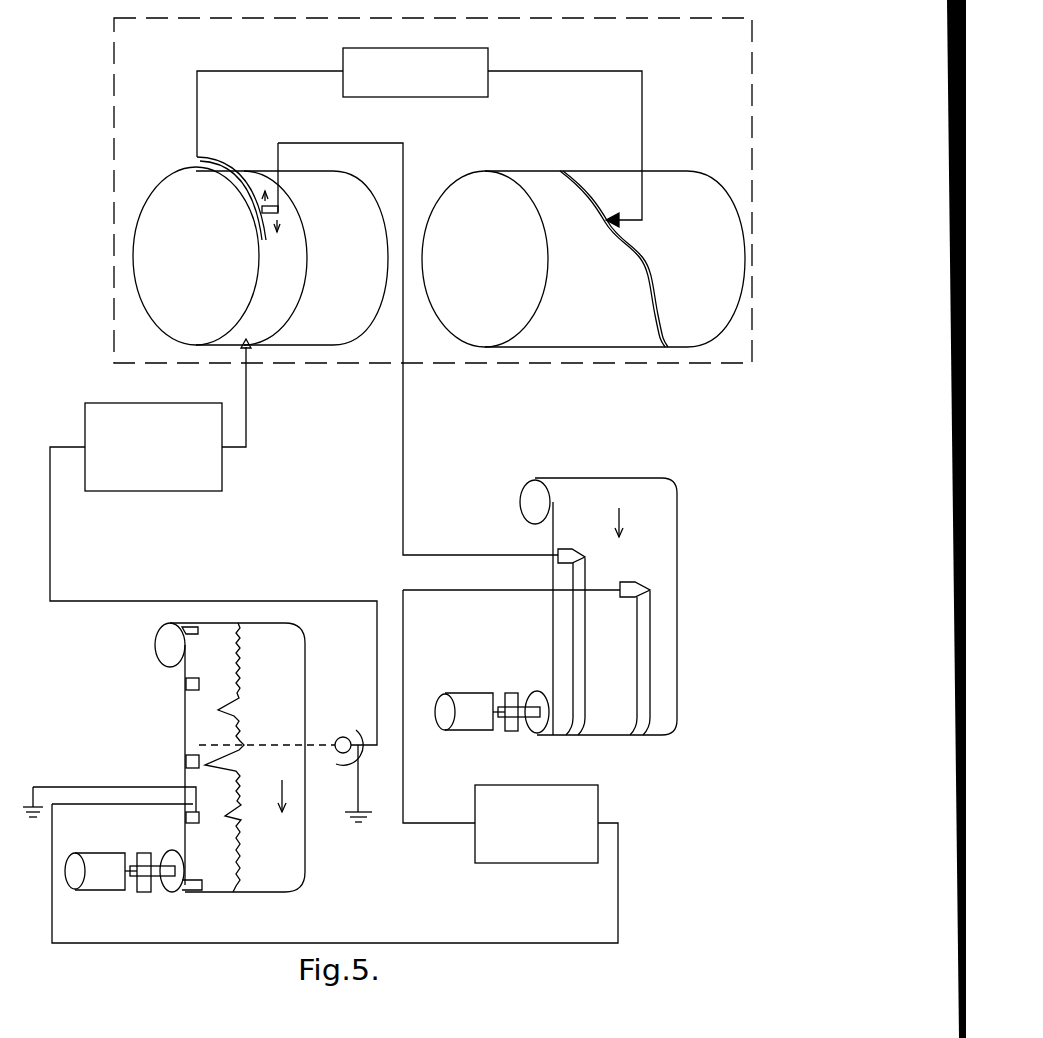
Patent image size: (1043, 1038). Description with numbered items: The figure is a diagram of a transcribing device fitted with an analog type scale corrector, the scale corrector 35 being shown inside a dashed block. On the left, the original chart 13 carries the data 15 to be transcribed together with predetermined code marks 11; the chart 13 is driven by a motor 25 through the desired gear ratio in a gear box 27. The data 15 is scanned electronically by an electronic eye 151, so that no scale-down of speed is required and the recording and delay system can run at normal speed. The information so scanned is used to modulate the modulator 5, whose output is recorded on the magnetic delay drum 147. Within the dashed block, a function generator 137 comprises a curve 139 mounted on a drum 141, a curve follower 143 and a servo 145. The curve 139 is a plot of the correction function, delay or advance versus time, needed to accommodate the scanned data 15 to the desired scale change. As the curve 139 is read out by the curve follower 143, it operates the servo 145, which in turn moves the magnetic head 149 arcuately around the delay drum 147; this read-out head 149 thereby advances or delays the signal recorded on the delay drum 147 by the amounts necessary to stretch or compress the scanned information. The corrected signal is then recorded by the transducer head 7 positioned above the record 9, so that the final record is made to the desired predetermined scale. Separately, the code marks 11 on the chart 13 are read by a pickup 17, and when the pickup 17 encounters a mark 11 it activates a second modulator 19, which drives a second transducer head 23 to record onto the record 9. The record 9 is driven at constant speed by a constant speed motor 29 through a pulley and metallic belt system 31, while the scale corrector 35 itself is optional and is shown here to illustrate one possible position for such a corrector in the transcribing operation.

The modulator 5 is at (150, 403).
The transducer head 7 is at (576, 551).
The record 9 is at (677, 548).
The code marks 11 is at (186, 683).
The chart 13 is at (305, 670).
The data 15 is at (241, 805).
The pickup 17 is at (200, 812).
The modulator 19 is at (527, 863).
The transducer head 23 is at (633, 582).
The motor 25 is at (97, 892).
The gear box 27 is at (150, 892).
The constant speed motor 29 is at (467, 731).
The pulley and metallic belt system 31 is at (512, 731).
The scale corrector 35 is at (114, 50).
The function generator 137 is at (562, 160).
The curve 139 is at (645, 252).
The drum 141 is at (700, 173).
The curve follower 143 is at (612, 213).
The servo 145 is at (485, 48).
The magnetic delay drum 147 is at (260, 256).
The magnetic head 149 is at (262, 210).
The electronic eye 151 is at (343, 736).